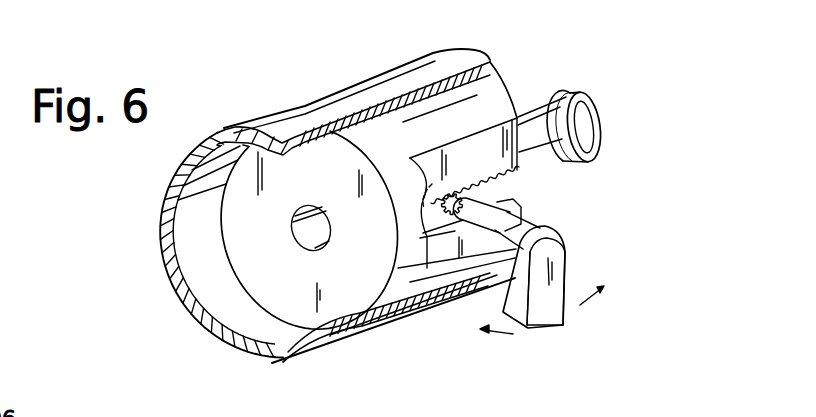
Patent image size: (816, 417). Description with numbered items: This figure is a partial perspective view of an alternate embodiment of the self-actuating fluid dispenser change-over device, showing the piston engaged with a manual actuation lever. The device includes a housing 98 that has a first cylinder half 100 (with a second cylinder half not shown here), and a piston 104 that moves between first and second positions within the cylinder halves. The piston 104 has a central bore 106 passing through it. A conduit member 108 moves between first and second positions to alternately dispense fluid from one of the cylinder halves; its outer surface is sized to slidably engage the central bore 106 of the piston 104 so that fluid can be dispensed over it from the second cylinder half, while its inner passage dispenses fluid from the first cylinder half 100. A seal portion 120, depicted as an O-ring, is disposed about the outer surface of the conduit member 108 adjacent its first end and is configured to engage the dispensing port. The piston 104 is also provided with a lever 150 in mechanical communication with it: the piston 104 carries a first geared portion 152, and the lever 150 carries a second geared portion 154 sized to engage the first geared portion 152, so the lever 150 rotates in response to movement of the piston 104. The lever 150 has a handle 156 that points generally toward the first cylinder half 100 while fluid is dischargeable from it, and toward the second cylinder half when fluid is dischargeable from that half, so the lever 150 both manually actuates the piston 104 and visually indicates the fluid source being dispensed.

The housing 98 is at (274, 362).
The first cylinder half 100 is at (358, 336).
The piston 104 is at (477, 107).
The central bore 106 is at (310, 230).
The conduit member 108 is at (551, 133).
The seal portion 120 is at (576, 96).
The lever 150 is at (584, 262).
The first geared portion 152 is at (513, 178).
The second geared portion 154 is at (483, 196).
The handle 156 is at (552, 303).